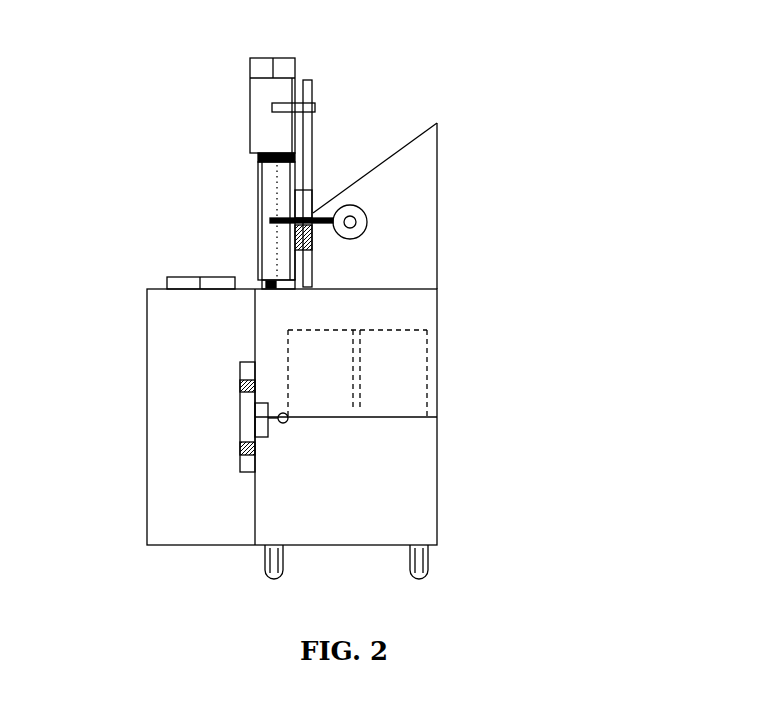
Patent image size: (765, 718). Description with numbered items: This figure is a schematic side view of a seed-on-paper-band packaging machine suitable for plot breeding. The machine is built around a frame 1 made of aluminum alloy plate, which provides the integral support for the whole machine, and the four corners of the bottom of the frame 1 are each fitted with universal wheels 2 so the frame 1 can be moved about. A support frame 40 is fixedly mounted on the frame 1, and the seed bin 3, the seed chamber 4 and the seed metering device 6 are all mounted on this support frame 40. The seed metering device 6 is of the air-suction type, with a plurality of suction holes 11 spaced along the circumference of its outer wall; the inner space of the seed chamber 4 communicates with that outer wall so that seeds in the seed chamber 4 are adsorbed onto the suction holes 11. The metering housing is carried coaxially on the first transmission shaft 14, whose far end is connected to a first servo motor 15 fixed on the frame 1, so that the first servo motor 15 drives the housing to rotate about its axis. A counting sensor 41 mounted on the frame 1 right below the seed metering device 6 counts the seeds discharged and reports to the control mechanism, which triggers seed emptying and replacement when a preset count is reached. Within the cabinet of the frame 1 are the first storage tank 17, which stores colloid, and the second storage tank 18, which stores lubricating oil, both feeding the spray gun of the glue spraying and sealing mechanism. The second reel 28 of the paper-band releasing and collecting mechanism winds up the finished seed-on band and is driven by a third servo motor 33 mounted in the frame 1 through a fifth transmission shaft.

The frame 1 is at (381, 334).
The universal wheels 2 is at (440, 527).
The seed bin 3 is at (283, 71).
The seed chamber 4 is at (275, 93).
The seed metering device 6 is at (231, 219).
The suction holes 11 is at (231, 153).
The first transmission shaft 14 is at (312, 193).
The first servo motor 15 is at (406, 186).
The first storage tank 17 is at (429, 345).
The second storage tank 18 is at (412, 366).
The second reel 28 is at (174, 394).
The third servo motor 33 is at (194, 435).
The support frame 40 is at (333, 79).
The counting sensor 41 is at (231, 248).